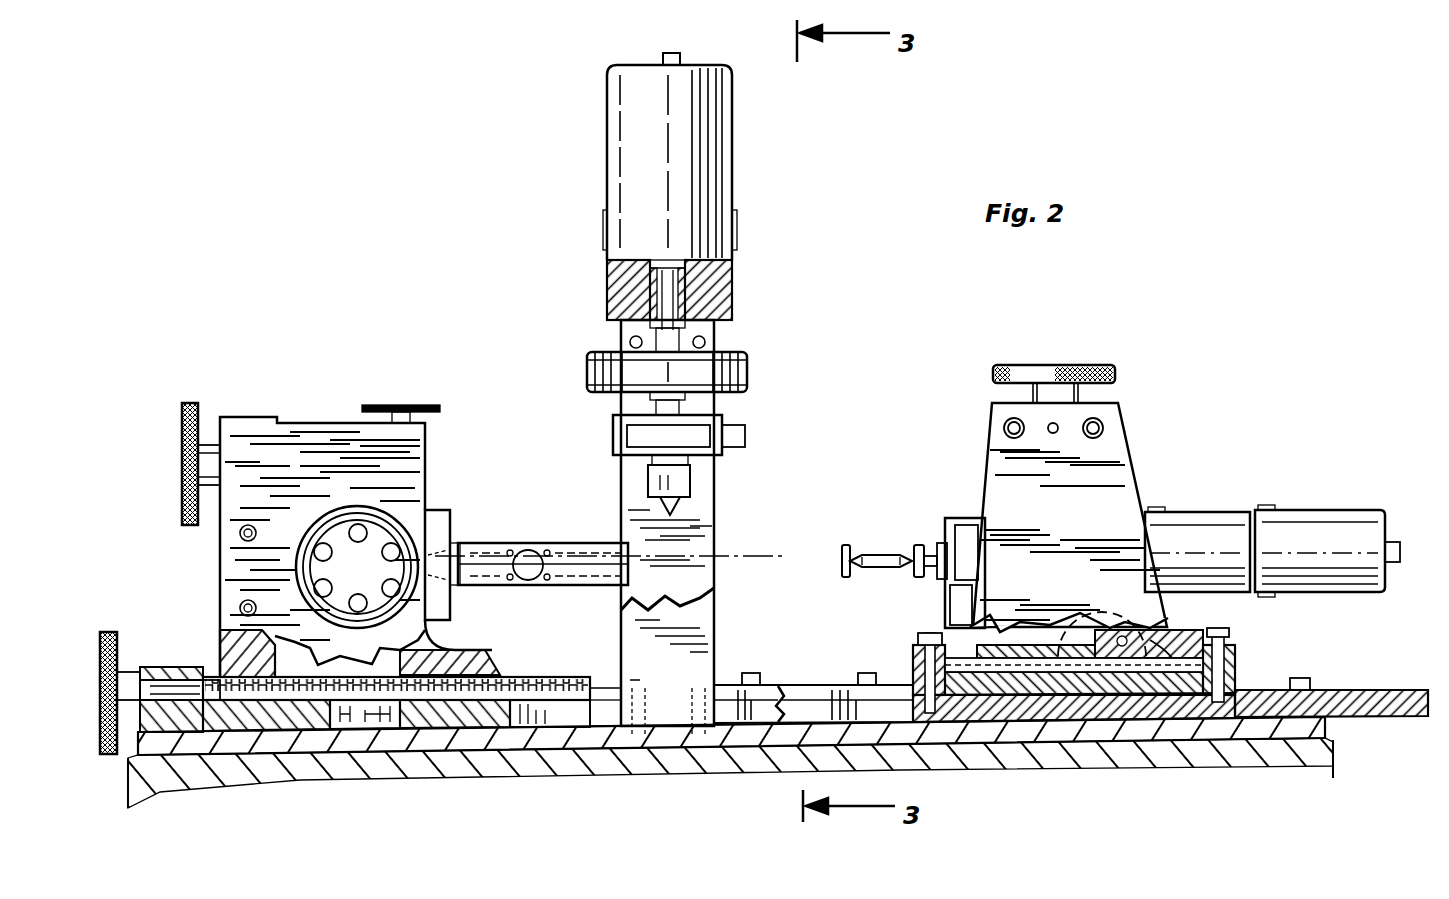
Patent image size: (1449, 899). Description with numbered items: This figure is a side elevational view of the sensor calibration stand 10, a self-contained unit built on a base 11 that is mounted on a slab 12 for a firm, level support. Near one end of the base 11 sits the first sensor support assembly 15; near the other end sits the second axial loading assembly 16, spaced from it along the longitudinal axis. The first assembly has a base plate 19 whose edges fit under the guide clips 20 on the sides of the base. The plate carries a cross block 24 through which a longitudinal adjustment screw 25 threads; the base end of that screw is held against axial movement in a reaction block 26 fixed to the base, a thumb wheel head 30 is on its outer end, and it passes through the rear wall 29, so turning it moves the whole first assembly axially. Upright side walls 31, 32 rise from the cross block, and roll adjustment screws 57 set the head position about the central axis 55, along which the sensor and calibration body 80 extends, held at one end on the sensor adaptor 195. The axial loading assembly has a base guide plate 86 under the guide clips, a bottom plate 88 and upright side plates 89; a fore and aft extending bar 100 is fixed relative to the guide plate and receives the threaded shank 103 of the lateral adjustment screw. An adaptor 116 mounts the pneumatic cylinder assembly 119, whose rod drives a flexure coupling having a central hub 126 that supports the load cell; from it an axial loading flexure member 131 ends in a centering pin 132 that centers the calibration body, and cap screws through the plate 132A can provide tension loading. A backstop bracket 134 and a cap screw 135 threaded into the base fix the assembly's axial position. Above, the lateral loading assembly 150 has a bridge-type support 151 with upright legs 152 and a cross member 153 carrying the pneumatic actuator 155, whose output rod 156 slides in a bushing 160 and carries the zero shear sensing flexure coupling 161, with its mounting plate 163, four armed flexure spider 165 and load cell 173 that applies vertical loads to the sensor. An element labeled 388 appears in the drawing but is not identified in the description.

The sensor calibration stand 10 is at (508, 778).
The base 11 is at (556, 748).
The slab 12 is at (125, 780).
The first sensor support assembly 15 is at (330, 408).
The second axial loading assembly 16 is at (1028, 355).
The base plate 19 is at (330, 705).
The guide clips 20 is at (838, 688).
The cross block 24 is at (462, 652).
The longitudinal adjustment screw 25 is at (542, 677).
The reaction block 26 is at (178, 670).
The rear wall 29 is at (215, 640).
The thumb wheel head 30 is at (110, 632).
The upright side wall 31 is at (300, 705).
The upright side wall 32 is at (432, 520).
The central axis 55 is at (742, 552).
The roll adjustment screws 57 is at (414, 405).
The sensor and calibration body 80 is at (548, 540).
The base guide plate 86 is at (1232, 712).
The bottom plate 88 is at (1038, 690).
The upright side plates 89 is at (1118, 490).
The fore and aft extending bar 100 is at (1172, 640).
The threaded shank 103 is at (1100, 630).
The adaptor 116 is at (1225, 510).
The pneumatic cylinder assembly 119 is at (1320, 525).
The central hub 126 is at (955, 518).
The axial loading flexure member 131 is at (880, 552).
The centering pin 132 is at (845, 570).
The plate 132A is at (855, 545).
The backstop bracket 134 is at (1350, 692).
The cap screw 135 is at (1300, 690).
The lateral (vertical) loading assembly 150 is at (620, 142).
The bridge-type support 151 is at (612, 333).
The upright legs 152 is at (712, 480).
The cross member 153 is at (610, 292).
The pneumatic actuator 155 is at (712, 160).
The output rod 156 is at (662, 292).
The bushing 160 is at (734, 268).
The zero shear sensing flexure coupling 161 is at (748, 366).
The mounting plate 163 is at (605, 357).
The four armed flexure spider 165 is at (595, 385).
The load cell 173 is at (616, 440).
The sensor adaptor 195 is at (455, 542).
The flange 388 is at (362, 525).